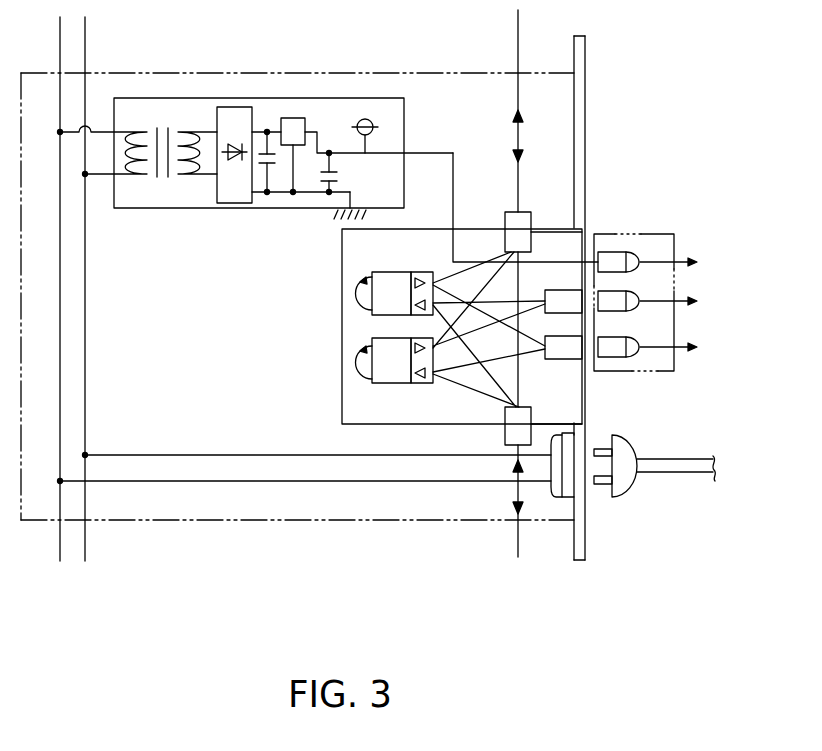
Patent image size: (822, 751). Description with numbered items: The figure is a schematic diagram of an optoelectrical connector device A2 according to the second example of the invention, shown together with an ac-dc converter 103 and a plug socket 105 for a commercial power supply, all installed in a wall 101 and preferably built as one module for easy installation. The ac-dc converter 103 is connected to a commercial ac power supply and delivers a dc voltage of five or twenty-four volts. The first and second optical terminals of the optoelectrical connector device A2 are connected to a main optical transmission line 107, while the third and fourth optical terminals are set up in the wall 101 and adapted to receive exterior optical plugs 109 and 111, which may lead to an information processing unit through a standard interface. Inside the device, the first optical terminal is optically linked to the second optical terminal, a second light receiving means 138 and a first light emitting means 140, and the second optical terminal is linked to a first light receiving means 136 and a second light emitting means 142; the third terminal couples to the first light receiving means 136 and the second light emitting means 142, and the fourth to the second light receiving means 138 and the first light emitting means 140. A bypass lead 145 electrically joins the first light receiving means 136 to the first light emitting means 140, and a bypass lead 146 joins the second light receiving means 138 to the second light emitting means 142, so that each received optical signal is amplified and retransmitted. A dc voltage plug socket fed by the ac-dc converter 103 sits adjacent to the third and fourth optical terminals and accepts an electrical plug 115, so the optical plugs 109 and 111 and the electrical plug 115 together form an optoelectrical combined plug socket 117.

The optoelectrical connector device A2 is at (384, 299).
The wall 101 is at (585, 540).
The ac-dc converter 103 is at (404, 127).
The plug socket 105 is at (563, 488).
The main optical transmission line 107 is at (518, 50).
The optical plug 109 is at (641, 297).
The optical plug 111 is at (641, 340).
The electrical plug 115 is at (641, 258).
The optoelectrical combined plug socket 117 is at (664, 278).
The first light receiving means 136 is at (411, 305).
The second light receiving means 138 is at (420, 384).
The first light emitting means 140 is at (411, 285).
The second light emitting means 142 is at (411, 348).
The bypass lead 145 is at (355, 294).
The bypass lead 146 is at (355, 361).